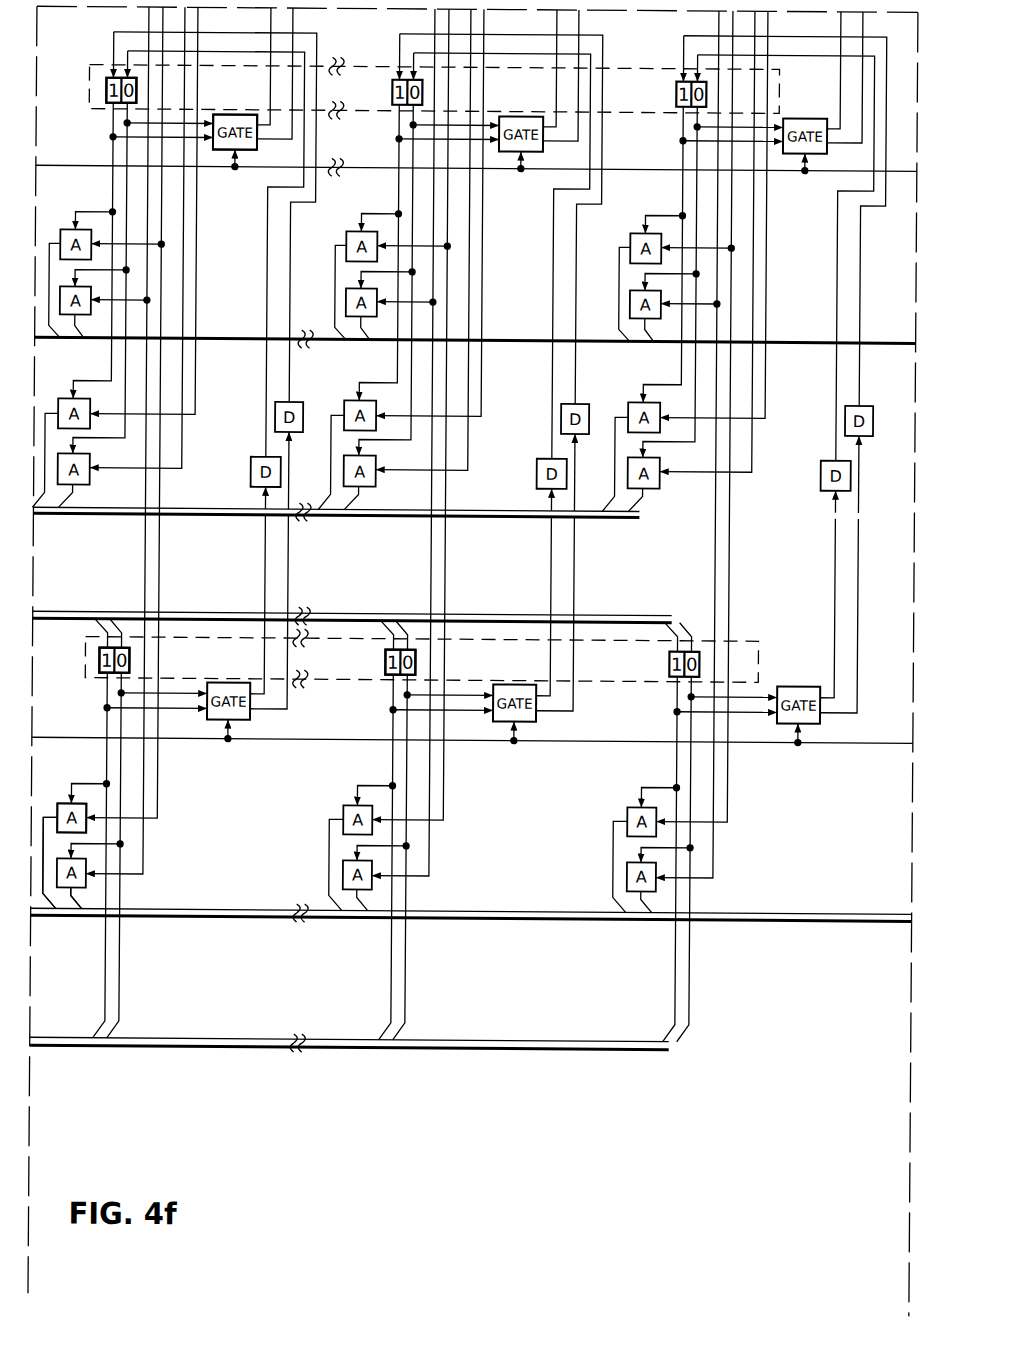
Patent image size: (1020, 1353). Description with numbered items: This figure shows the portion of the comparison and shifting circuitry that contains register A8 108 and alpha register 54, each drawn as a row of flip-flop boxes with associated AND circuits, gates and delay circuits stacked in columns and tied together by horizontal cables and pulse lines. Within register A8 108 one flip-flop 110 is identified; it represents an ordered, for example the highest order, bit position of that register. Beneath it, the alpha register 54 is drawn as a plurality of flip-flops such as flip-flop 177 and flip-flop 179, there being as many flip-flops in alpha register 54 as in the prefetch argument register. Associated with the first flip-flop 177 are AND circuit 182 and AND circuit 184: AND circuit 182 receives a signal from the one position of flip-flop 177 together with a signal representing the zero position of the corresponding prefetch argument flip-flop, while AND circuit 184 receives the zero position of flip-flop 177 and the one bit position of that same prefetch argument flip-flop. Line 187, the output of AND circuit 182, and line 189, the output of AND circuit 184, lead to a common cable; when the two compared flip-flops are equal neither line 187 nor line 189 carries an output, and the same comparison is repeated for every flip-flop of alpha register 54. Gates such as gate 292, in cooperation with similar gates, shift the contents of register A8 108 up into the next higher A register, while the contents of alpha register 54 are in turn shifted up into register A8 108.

The register A8 108 is at (90, 67).
The flip-flop 110 is at (107, 92).
The gate 292 is at (256, 148).
The alpha register 54 is at (89, 648).
The flip-flop 177 is at (104, 668).
The flip-flop 179 is at (390, 660).
The AND circuit 182 is at (66, 801).
The line 187 is at (49, 812).
The AND circuit 184 is at (62, 907).
The line 189 is at (89, 910).